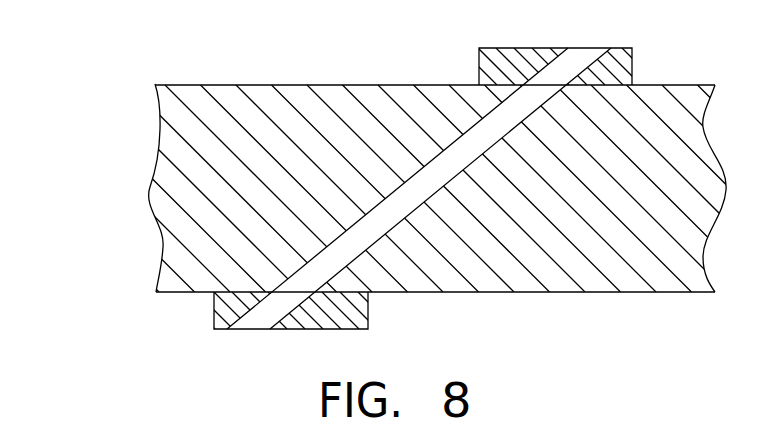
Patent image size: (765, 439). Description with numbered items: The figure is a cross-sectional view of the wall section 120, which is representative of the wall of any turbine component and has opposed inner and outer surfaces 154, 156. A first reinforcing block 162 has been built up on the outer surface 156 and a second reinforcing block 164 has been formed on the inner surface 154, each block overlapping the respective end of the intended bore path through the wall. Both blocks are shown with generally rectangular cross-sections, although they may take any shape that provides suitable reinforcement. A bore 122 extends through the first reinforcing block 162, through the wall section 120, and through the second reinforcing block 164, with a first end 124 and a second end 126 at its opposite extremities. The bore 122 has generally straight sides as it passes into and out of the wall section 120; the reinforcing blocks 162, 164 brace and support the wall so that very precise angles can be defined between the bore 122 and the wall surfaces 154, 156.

The wall section 120 is at (135, 240).
The bore 122 is at (583, 53).
The first end 124 is at (257, 318).
The second end 126 is at (568, 48).
The inner surface 154 is at (528, 293).
The outer surface 156 is at (257, 85).
The first reinforcing block 162 is at (633, 73).
The second reinforcing block 164 is at (357, 330).